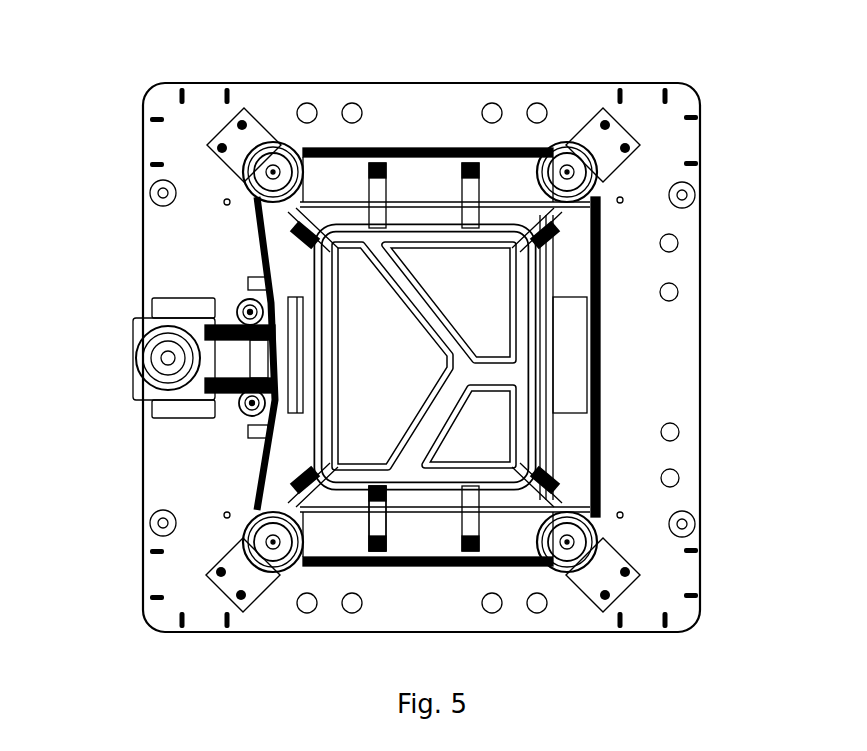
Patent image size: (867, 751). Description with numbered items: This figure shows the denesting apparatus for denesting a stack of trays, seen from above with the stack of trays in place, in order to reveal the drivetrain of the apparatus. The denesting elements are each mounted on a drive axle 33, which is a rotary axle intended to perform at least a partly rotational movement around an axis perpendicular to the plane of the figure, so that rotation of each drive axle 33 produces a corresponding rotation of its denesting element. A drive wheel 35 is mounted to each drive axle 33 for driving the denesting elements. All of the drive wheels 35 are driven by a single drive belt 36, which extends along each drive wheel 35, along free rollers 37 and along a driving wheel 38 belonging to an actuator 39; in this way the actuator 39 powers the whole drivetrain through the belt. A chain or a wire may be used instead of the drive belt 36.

The drive axle 33 is at (276, 160).
The drive wheel 35 is at (262, 128).
The drive belt 36 is at (470, 165).
The free roller 37 is at (248, 303).
The driving wheel 38 is at (160, 360).
The actuator 39 is at (152, 312).